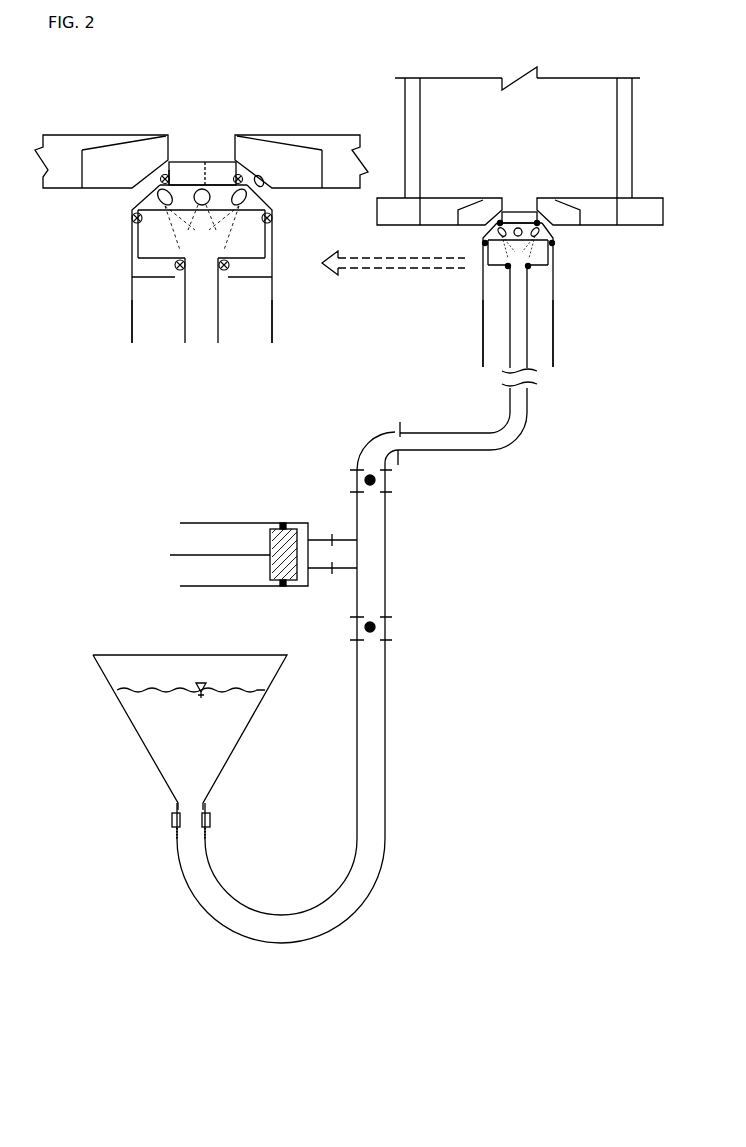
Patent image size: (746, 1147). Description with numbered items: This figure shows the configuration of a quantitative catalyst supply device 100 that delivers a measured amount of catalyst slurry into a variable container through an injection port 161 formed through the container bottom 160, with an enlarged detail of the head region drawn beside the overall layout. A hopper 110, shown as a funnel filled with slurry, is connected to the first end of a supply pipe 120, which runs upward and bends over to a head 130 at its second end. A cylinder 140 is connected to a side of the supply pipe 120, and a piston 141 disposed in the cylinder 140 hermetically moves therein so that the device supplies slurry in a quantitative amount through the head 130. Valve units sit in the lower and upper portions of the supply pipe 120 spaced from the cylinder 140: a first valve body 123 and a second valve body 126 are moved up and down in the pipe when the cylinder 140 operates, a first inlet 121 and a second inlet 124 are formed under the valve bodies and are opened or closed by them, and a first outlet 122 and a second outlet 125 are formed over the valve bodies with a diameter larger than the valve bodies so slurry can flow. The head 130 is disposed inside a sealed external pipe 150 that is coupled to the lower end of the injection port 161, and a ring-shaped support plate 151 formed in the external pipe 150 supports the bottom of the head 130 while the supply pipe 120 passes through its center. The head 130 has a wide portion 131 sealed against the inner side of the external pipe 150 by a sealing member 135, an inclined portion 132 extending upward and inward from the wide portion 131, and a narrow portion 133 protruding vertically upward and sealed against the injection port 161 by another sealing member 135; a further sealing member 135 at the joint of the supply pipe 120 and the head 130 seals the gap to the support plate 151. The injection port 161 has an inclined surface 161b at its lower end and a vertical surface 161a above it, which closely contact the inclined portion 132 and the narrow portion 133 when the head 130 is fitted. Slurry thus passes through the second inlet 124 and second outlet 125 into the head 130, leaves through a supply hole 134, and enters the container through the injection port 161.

The quantitative catalyst supply device 100 is at (146, 445).
The hopper 110 is at (150, 752).
The supply pipe 120 is at (385, 737).
The first inlet 121 is at (369, 641).
The first outlet 122 is at (378, 613).
The first valve body 123 is at (378, 627).
The second inlet 124 is at (372, 494).
The second outlet 125 is at (368, 472).
The second valve body 126 is at (365, 480).
The head 130 is at (137, 252).
The wide portion 131 is at (263, 238).
The inclined portion 132 is at (257, 193).
The narrow portion 133 is at (205, 160).
The supply hole 134 is at (158, 192).
The sealing member 135 is at (162, 178).
The cylinder 140 is at (220, 522).
The piston 141 is at (270, 540).
The external pipe 150 is at (272, 327).
The support plate 151 is at (153, 278).
The container bottom 160 is at (147, 140).
The injection port 161 is at (194, 140).
The vertical surface 161a is at (232, 142).
The inclined surface 161b is at (262, 178).